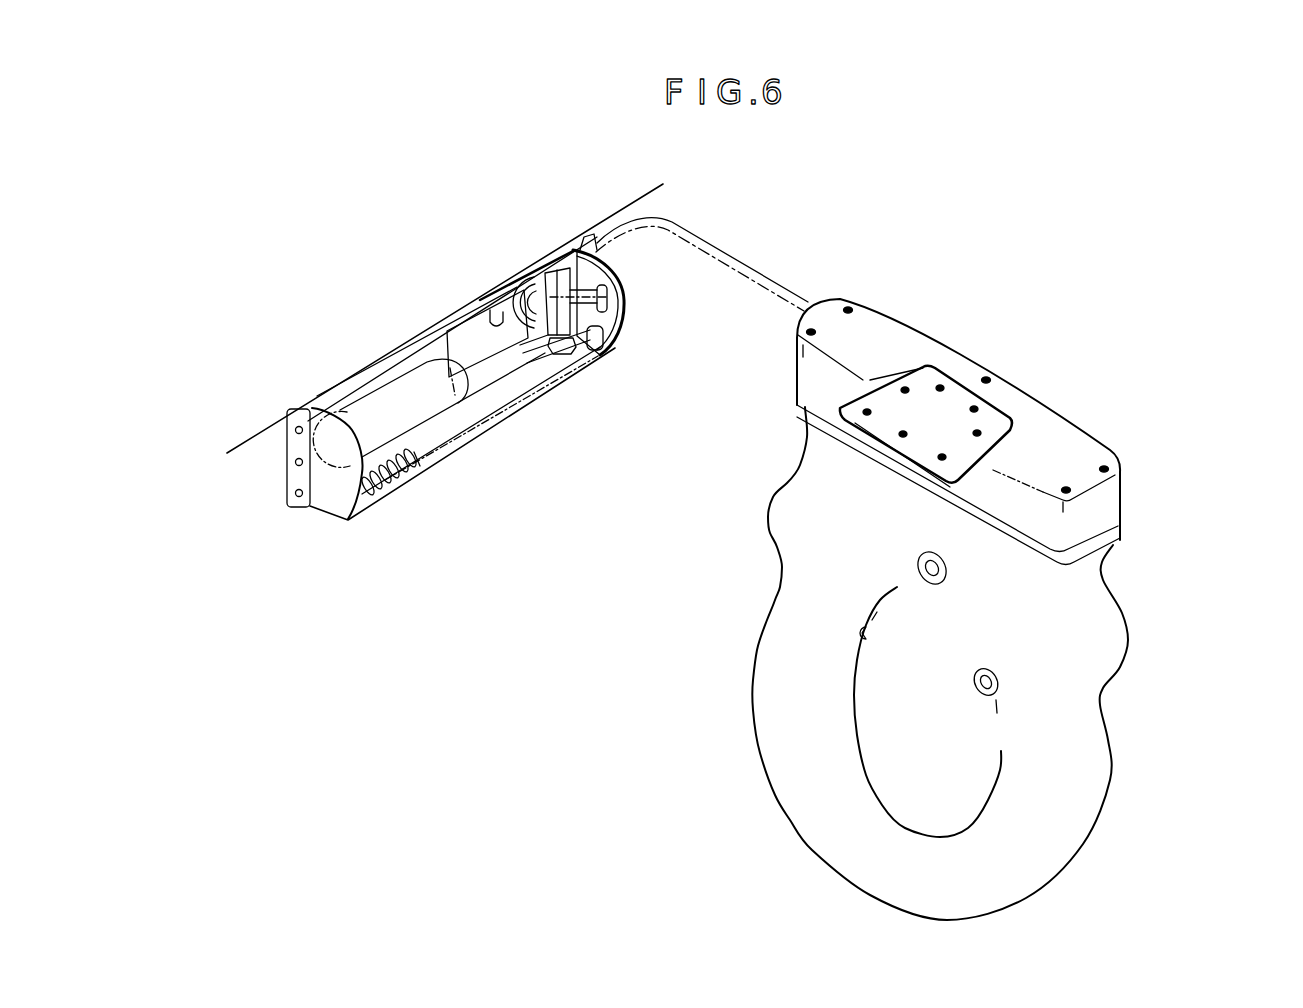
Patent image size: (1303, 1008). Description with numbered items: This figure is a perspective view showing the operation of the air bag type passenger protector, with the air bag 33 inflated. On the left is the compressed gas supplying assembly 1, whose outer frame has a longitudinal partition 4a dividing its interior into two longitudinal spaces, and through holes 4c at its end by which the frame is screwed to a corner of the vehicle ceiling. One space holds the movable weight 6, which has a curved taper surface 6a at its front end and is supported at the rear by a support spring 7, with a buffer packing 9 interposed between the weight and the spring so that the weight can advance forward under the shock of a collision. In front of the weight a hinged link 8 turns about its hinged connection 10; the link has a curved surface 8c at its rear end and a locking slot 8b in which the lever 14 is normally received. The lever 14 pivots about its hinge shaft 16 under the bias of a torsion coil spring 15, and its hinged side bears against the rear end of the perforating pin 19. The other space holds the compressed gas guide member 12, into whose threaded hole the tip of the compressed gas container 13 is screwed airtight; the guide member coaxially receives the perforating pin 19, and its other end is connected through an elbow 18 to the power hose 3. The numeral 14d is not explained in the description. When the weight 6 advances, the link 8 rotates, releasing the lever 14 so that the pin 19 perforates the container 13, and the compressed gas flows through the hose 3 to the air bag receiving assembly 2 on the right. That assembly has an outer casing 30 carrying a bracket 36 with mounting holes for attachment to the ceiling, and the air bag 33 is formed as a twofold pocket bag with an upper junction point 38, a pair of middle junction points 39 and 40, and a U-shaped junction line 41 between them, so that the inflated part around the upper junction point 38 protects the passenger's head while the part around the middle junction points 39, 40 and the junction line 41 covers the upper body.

The compressed gas supplying assembly 1 is at (327, 527).
The air bag receiving assembly 2 is at (1030, 387).
The power hose 3 is at (757, 277).
The longitudinal partition 4a is at (482, 387).
The through holes 4c is at (289, 412).
The movable weight 6 is at (450, 437).
The curved taper surface 6a is at (532, 387).
The support spring 7 is at (390, 487).
The hinged link 8 is at (558, 357).
The locking slot 8b is at (552, 368).
The curved surface 8c is at (601, 367).
The buffer packing 9 is at (415, 475).
The hinged connection 10 is at (583, 363).
The compressed gas guide member 12 is at (473, 327).
The compressed gas container 13 is at (330, 400).
The lever 14 is at (603, 283).
The pin axis 14d is at (533, 273).
The torsion coil spring 15 is at (517, 283).
The hinge shaft 16 is at (553, 300).
The elbow 18 is at (484, 303).
The perforating pin 19 is at (507, 307).
The outer casing 30 is at (1090, 510).
The air bag 33 is at (765, 765).
The bracket 36 is at (928, 425).
The upper junction point 38 is at (942, 575).
The middle junction point 39 is at (860, 633).
The middle junction point 40 is at (997, 694).
The U-shaped junction line 41 is at (872, 791).